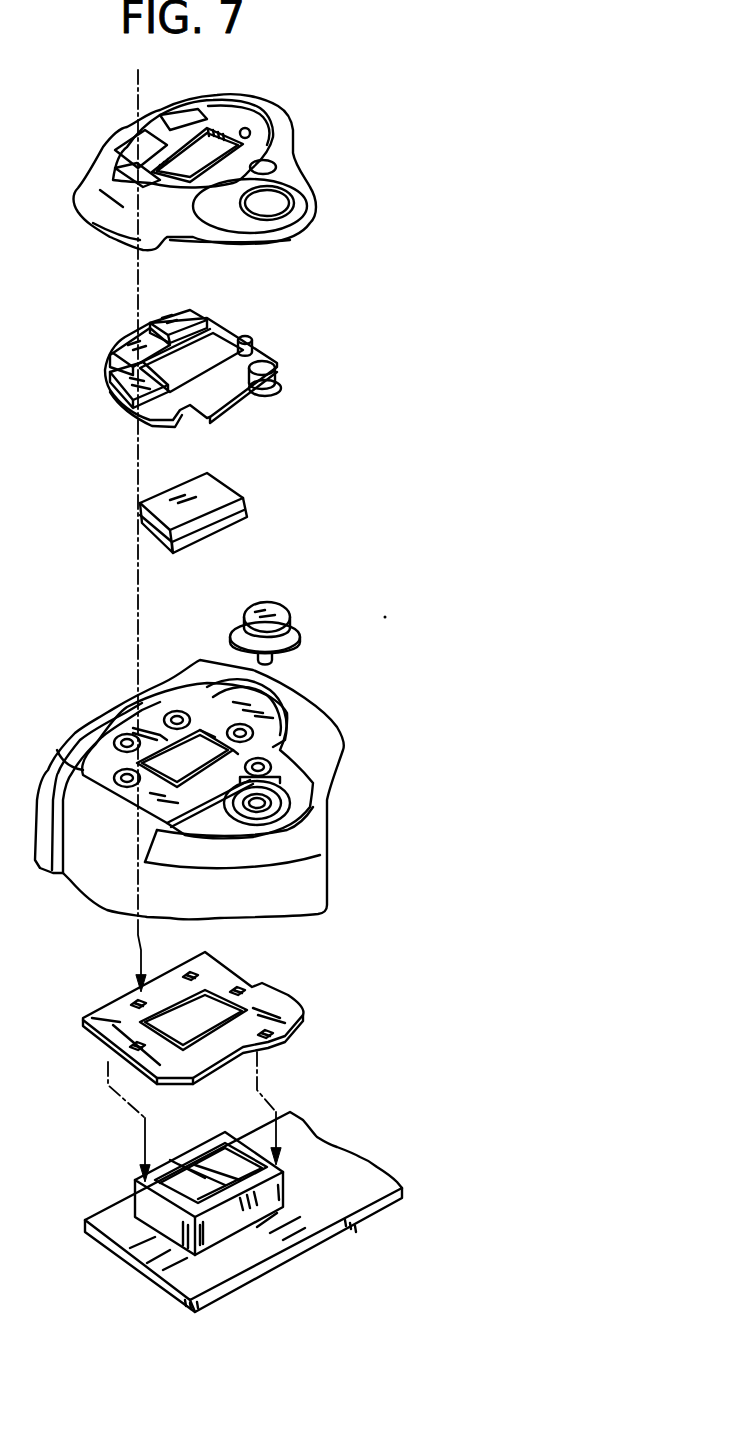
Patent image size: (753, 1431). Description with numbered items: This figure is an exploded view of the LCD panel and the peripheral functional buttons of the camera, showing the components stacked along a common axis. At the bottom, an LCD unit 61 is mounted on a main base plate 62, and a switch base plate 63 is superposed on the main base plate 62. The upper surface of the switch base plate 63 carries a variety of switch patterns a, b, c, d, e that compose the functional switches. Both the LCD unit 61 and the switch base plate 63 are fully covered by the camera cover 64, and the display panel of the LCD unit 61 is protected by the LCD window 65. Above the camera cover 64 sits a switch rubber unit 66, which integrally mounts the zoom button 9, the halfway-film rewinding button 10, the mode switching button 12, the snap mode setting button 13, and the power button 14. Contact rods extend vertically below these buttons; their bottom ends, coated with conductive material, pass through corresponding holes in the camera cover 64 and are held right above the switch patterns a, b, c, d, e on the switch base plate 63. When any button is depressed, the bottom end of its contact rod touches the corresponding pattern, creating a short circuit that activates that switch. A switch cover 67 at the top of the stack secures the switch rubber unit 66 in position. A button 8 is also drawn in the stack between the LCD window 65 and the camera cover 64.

The switch cover 67 is at (290, 128).
The switch rubber unit 66 is at (220, 349).
The mode switching button 12 is at (193, 313).
The snap mode setting button 13 is at (115, 350).
The power button 14 is at (110, 380).
The halfway-film rewinding button 10 is at (250, 340).
The zoom button 9 is at (287, 352).
The LCD window 65 is at (225, 490).
The push button 8 is at (280, 608).
The camera cover 64 is at (315, 880).
The switch base plate 63 is at (219, 1008).
The switch pattern a is at (280, 1037).
The switch pattern b is at (247, 987).
The switch pattern c is at (197, 972).
The switch pattern d is at (132, 1002).
The switch pattern e is at (130, 1047).
The main base plate 62 is at (103, 1242).
The LCD unit 61 is at (267, 1203).